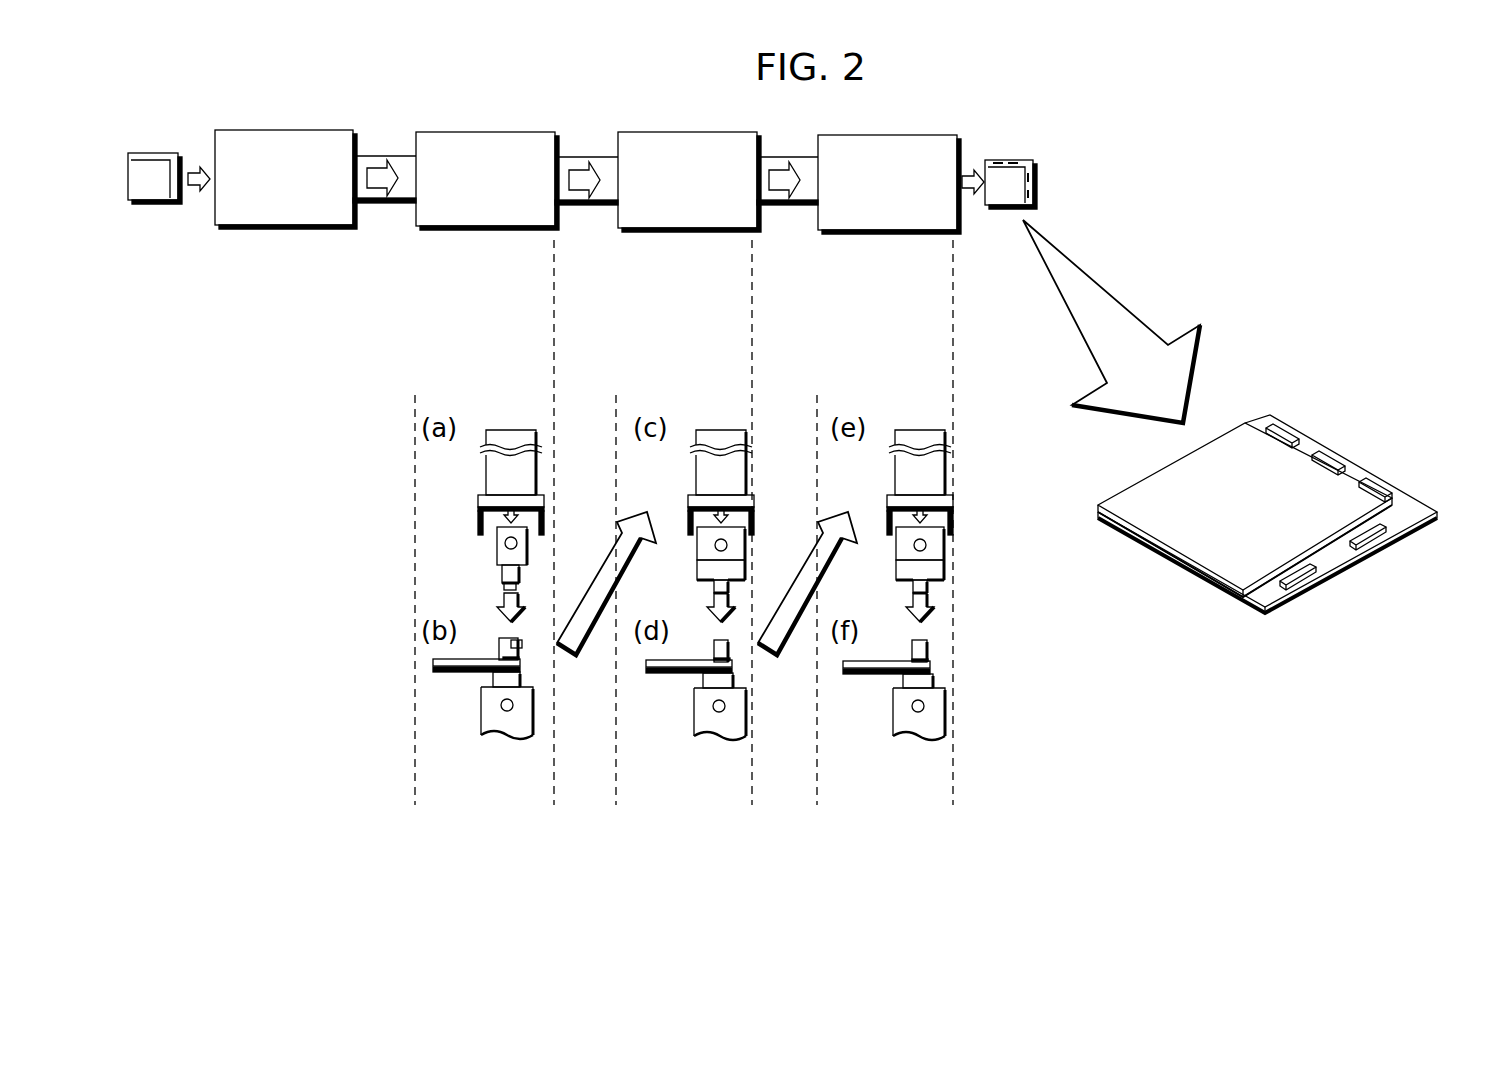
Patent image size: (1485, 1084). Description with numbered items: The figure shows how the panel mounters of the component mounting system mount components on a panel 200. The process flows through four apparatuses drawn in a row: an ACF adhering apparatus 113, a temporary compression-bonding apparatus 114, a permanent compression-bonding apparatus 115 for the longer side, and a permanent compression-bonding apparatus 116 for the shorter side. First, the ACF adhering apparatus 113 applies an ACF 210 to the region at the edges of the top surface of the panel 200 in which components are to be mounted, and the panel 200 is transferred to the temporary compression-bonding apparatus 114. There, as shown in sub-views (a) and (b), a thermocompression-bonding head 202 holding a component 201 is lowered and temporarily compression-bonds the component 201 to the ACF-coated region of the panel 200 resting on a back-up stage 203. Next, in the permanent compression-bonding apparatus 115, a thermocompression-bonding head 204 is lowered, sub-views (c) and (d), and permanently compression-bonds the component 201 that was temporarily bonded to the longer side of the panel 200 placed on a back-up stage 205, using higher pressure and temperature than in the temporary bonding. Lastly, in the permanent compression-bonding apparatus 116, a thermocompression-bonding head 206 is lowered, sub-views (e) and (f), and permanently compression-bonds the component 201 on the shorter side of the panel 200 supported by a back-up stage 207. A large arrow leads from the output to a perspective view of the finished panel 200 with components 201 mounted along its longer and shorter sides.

The ACF adhering apparatus 113 is at (286, 245).
The temporary compression-bonding apparatus 114 is at (478, 260).
The permanent compression-bonding apparatus 115 is at (687, 260).
The permanent compression-bonding apparatus 116 is at (897, 262).
The panel 200 is at (440, 672).
The component 201 is at (522, 645).
The thermocompression-bonding head 202 is at (498, 641).
The back-up stage 203 is at (482, 685).
The thermocompression-bonding head 204 is at (714, 655).
The back-up stage 205 is at (693, 684).
The thermocompression-bonding head 206 is at (915, 655).
The back-up stage 207 is at (893, 686).
The ACF 210 is at (520, 663).